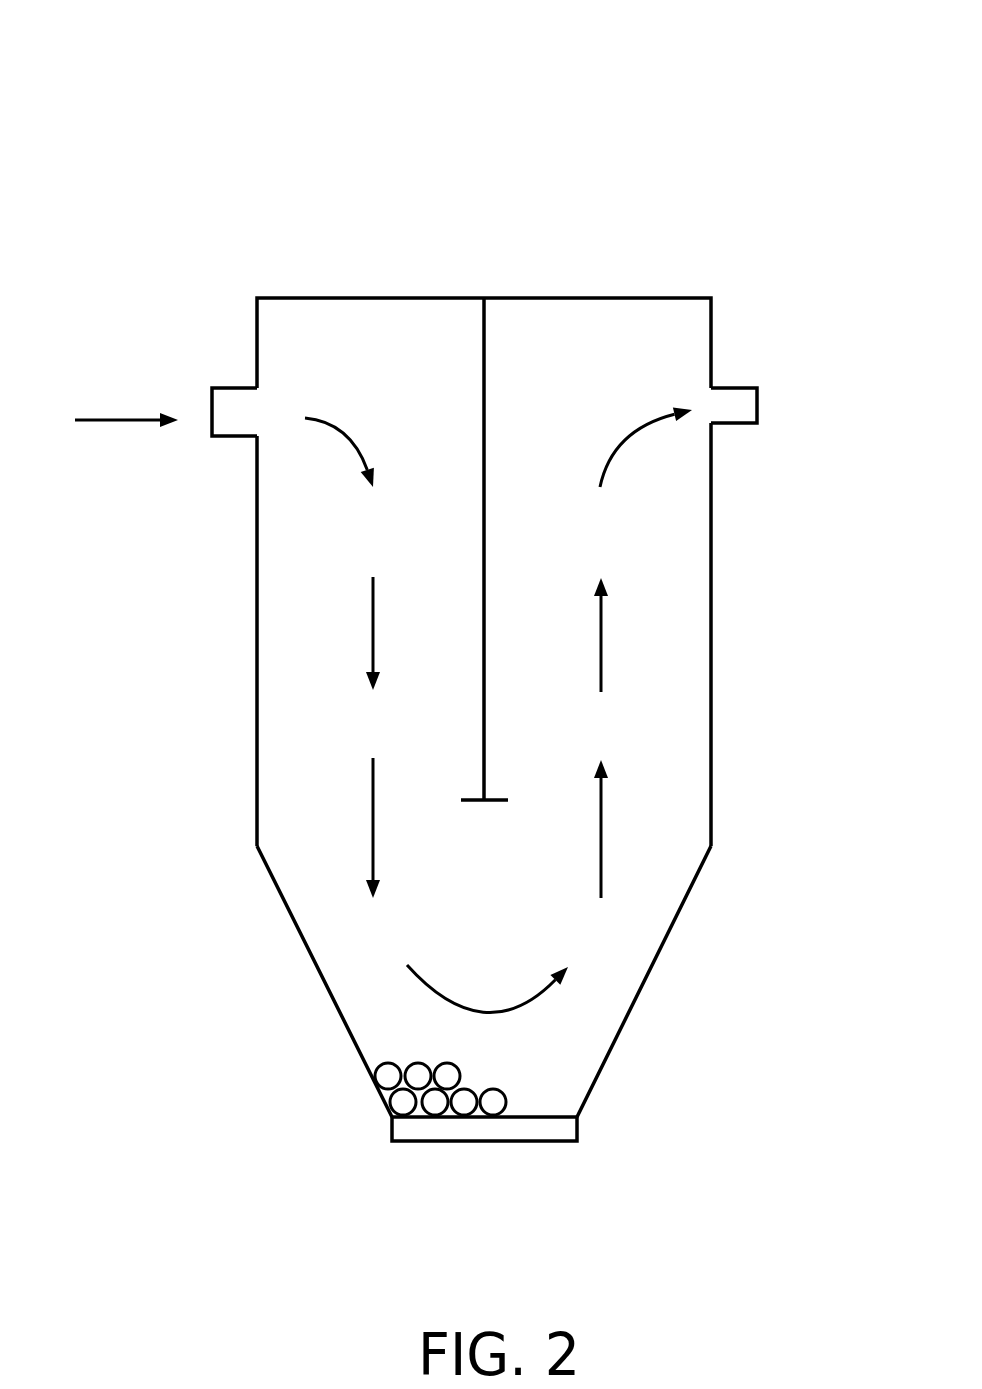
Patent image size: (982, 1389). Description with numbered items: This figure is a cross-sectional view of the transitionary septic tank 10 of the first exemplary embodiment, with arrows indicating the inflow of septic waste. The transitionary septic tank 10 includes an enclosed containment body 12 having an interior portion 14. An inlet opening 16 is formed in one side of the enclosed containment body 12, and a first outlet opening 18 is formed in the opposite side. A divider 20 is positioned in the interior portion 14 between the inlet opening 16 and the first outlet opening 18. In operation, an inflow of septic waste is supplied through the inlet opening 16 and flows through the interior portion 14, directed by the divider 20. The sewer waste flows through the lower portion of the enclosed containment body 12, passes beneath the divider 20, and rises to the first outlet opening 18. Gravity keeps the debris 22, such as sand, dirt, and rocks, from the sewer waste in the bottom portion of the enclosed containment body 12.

The transitionary septic tank 10 is at (466, 623).
The enclosed containment body 12 is at (713, 348).
The interior portion 14 is at (293, 762).
The inlet opening 16 is at (235, 387).
The first outlet opening 18 is at (725, 425).
The divider 20 is at (487, 348).
The debris 22 is at (505, 1095).